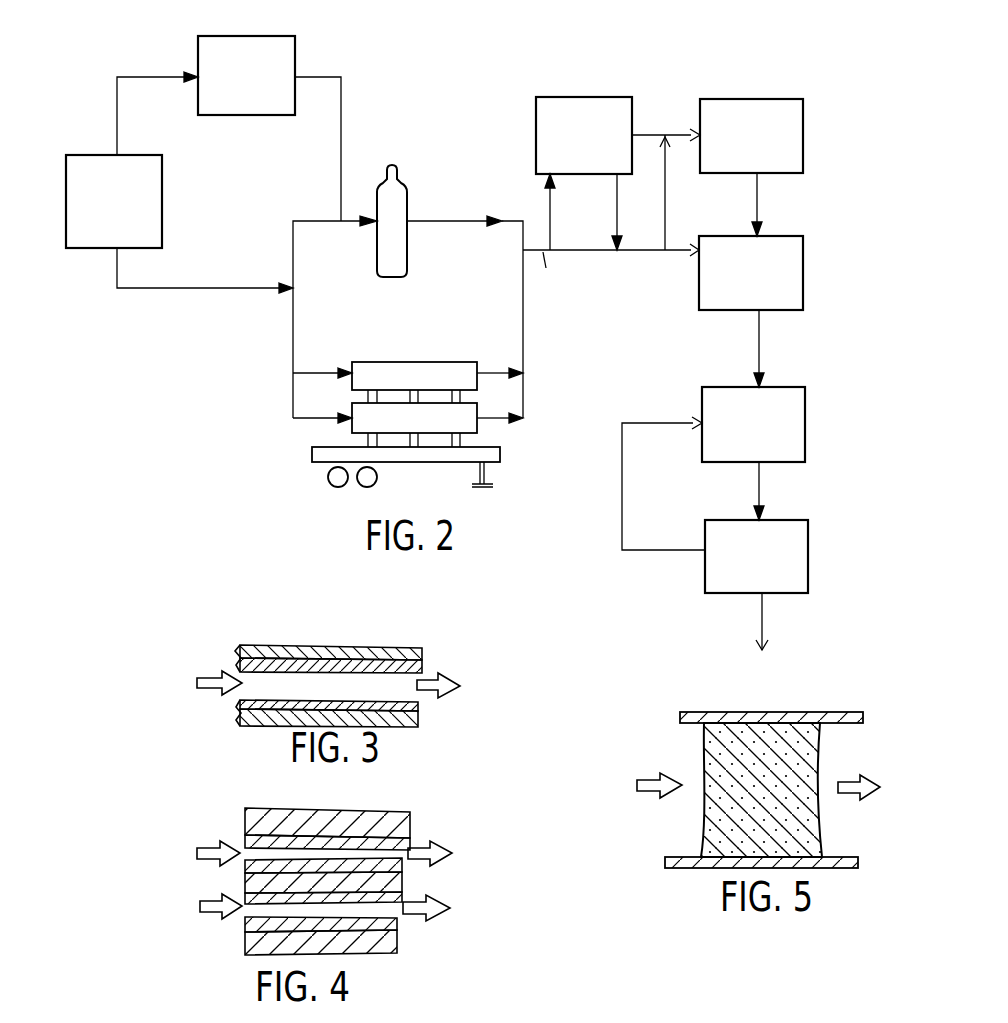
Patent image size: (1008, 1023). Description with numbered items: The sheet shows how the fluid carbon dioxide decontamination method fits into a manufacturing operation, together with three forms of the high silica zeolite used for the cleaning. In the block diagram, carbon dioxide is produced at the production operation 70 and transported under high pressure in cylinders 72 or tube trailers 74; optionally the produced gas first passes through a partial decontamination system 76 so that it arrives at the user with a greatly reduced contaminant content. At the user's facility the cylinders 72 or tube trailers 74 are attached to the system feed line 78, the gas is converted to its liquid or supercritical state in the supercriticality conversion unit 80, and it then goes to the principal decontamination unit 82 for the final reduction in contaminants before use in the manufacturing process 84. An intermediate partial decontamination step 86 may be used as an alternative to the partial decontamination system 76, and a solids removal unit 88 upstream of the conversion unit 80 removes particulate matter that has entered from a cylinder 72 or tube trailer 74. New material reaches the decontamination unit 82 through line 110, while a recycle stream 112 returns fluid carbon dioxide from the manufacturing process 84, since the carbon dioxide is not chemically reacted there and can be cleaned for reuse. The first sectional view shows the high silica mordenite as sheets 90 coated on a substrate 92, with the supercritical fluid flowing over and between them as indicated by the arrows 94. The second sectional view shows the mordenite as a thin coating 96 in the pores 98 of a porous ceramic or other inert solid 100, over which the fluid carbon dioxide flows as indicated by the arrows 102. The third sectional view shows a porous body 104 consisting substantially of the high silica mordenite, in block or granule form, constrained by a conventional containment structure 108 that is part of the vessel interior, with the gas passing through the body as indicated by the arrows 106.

In FIG. 2, the carbon dioxide production operation 70 is at (162, 190).
In FIG. 2, the cylinders 72 is at (407, 197).
In FIG. 2, the tube trailers 74 is at (435, 360).
In FIG. 2, the partial decontamination system 76 is at (253, 35).
In FIG. 2, the system feed line 78 is at (547, 276).
In FIG. 2, the supercriticality conversion unit 80 is at (803, 292).
In FIG. 2, the decontamination unit 82 is at (805, 415).
In FIG. 2, the manufacturing process 84 is at (808, 550).
In FIG. 2, the intermediate partial decontamination step 86 is at (585, 97).
In FIG. 2, the solids removal unit 88 is at (803, 128).
In FIG. 3, the sheets 90 is at (297, 664).
In FIG. 3, the substrate 92 is at (357, 653).
In FIG. 3, the arrows 94 is at (216, 677).
In FIG. 4, the thin coating 96 is at (378, 820).
In FIG. 4, the pores 98 is at (297, 852).
In FIG. 4, the porous inert solid 100 is at (347, 815).
In FIG. 4, the arrows 102 is at (200, 903).
In FIG. 5, the zeolite body 104 is at (813, 750).
In FIG. 5, the arrows 106 is at (655, 785).
In FIG. 5, the containment structure 108 is at (782, 712).
In FIG. 2, the line 110 is at (762, 352).
In FIG. 2, the recycle stream 112 is at (622, 493).